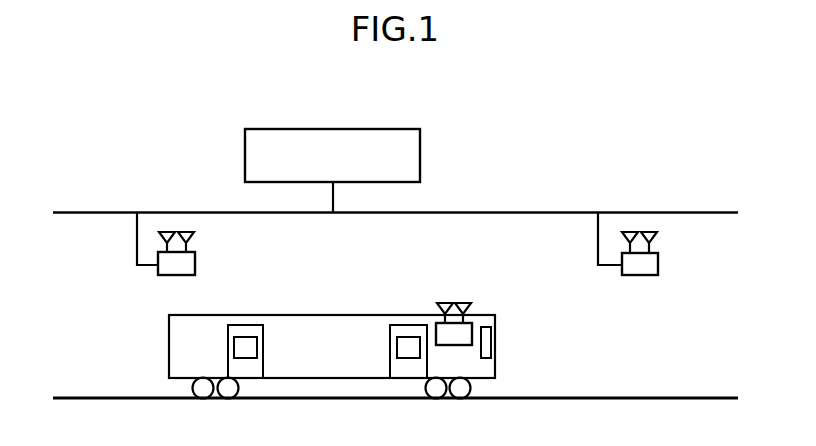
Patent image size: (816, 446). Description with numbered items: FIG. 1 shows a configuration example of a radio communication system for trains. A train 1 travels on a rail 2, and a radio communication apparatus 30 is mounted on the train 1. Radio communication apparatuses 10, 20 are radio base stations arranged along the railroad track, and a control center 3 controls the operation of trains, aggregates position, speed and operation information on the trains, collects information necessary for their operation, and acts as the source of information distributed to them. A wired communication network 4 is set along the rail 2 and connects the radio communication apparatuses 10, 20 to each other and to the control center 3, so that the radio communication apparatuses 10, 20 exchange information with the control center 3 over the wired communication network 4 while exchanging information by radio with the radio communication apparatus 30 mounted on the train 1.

The train 1 is at (356, 314).
The rail 2 is at (624, 382).
The control center 3 is at (389, 126).
The wired communication network 4 is at (510, 194).
The radio communication apparatus 10 is at (170, 276).
The radio communication apparatus 20 is at (639, 276).
The radio communication apparatus 30 is at (476, 322).